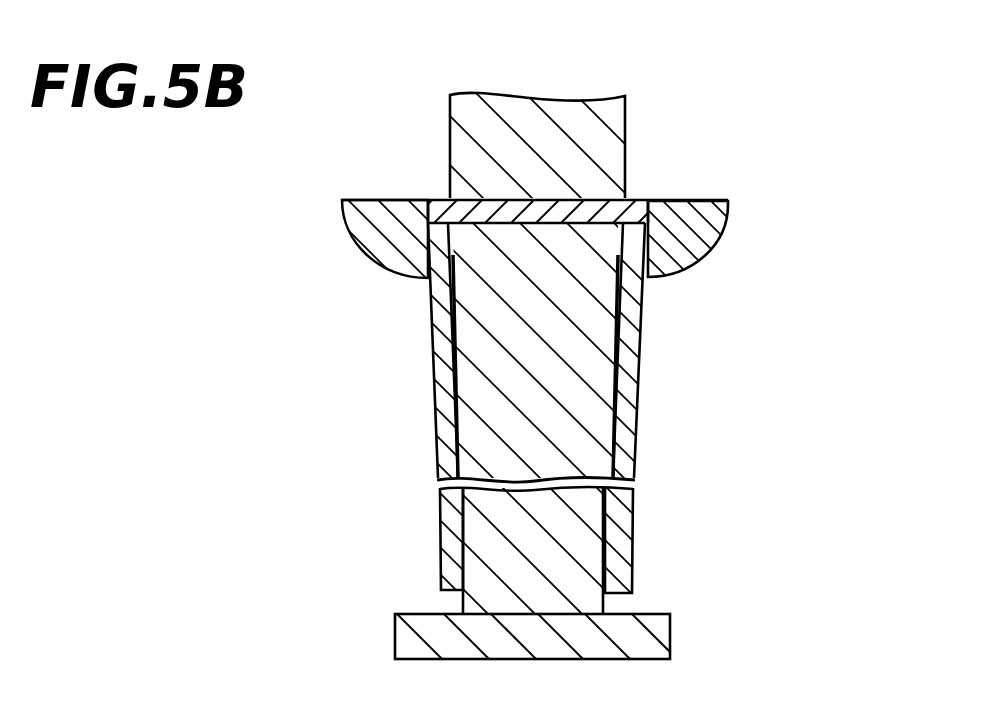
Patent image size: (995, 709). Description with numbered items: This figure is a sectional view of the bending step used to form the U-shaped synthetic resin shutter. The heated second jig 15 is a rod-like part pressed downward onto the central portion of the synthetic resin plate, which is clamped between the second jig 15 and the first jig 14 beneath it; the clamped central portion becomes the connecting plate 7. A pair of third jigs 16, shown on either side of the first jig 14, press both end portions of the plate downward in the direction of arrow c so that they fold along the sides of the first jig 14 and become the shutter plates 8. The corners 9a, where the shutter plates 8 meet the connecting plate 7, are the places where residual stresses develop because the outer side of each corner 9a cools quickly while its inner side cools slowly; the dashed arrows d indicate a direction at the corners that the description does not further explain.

The connecting plate 7 is at (543, 200).
The heated second jig 15 is at (608, 158).
The corner 9a is at (430, 199).
The third jig 16 is at (352, 217).
The shutter plate 8 is at (445, 440).
The first jig 14 is at (540, 568).
The bending direction c is at (315, 300).
The direction d is at (297, 331).